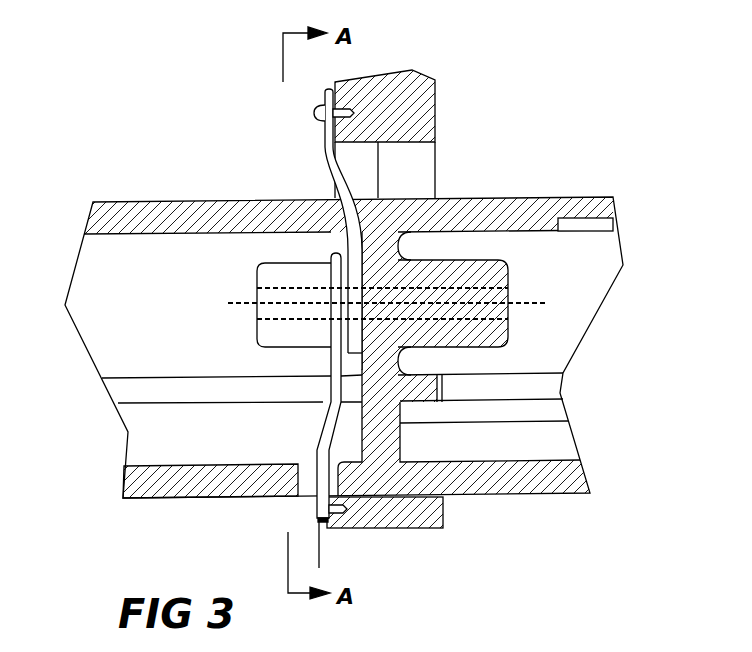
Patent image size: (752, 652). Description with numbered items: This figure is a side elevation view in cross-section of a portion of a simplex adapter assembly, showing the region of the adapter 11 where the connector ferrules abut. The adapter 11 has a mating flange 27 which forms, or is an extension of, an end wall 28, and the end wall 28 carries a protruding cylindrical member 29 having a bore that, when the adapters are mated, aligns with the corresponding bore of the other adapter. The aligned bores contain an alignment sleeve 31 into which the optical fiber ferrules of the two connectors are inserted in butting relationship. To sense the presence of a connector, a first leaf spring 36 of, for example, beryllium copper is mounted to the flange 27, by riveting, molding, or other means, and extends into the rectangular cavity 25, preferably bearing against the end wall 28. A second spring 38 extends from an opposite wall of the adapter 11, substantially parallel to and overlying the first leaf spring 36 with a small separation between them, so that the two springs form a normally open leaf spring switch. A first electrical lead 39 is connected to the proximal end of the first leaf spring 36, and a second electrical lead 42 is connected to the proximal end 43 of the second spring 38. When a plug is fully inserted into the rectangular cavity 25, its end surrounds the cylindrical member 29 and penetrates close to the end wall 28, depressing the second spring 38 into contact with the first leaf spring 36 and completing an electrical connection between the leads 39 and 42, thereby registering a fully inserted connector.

The adapter 11 is at (160, 200).
The rectangular cavity 25 is at (92, 332).
The mating flange 27 is at (392, 84).
The end wall 28 is at (357, 430).
The cylindrical member 29 is at (257, 350).
The alignment sleeve 31 is at (265, 296).
The first leaf spring 36 is at (324, 160).
The second spring 38 is at (317, 446).
The first electrical lead 39 is at (313, 114).
The second electrical lead 42 is at (320, 547).
The proximal end 43 is at (317, 509).